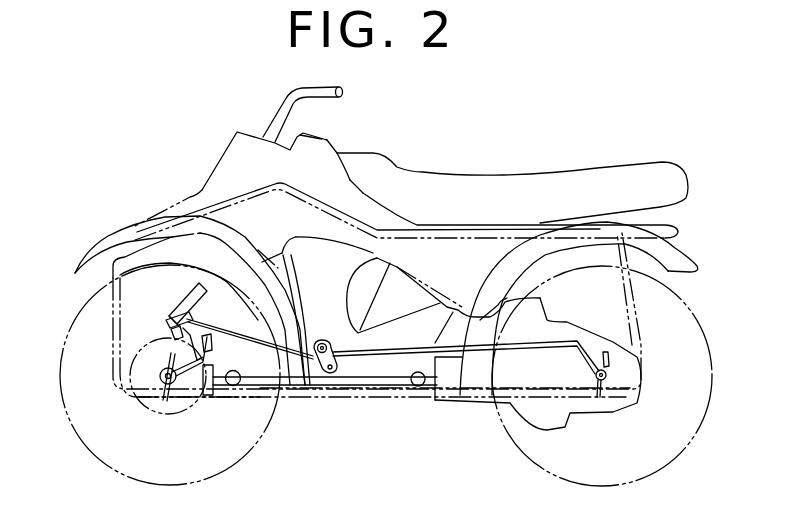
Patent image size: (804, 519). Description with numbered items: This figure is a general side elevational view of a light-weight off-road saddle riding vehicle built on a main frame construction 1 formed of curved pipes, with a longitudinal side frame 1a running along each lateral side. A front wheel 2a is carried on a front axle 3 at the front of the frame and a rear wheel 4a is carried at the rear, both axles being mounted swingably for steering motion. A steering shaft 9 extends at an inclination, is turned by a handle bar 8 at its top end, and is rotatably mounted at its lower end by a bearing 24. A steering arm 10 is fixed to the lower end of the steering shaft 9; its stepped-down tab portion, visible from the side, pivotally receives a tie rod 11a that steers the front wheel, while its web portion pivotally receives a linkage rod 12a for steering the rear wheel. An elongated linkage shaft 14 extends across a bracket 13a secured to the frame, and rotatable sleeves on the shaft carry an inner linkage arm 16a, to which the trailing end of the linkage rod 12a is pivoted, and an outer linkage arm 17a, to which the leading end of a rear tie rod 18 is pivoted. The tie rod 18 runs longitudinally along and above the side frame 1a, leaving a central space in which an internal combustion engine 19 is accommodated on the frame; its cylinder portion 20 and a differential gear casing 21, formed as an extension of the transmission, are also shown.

The main frame construction 1 is at (425, 401).
The side frame 1a is at (413, 400).
The front wheel 2a is at (92, 296).
The front axle 3 is at (150, 383).
The rear wheel 4a is at (690, 311).
The handle bar 8 is at (282, 100).
The steering shaft 9 is at (183, 292).
The steering arm 10 is at (183, 323).
The tie rod 11a is at (157, 353).
The linkage rod 12a is at (246, 394).
The bracket 13a is at (312, 387).
The linkage shaft 14 is at (322, 340).
The linkage arm 16a is at (342, 380).
The linkage arm 17a is at (263, 325).
The tie rod 18 is at (387, 362).
The internal combustion engine 19 is at (487, 317).
The cylinder portion 20 is at (402, 285).
The differential gear casing 21 is at (608, 404).
The bearing 24 is at (170, 320).